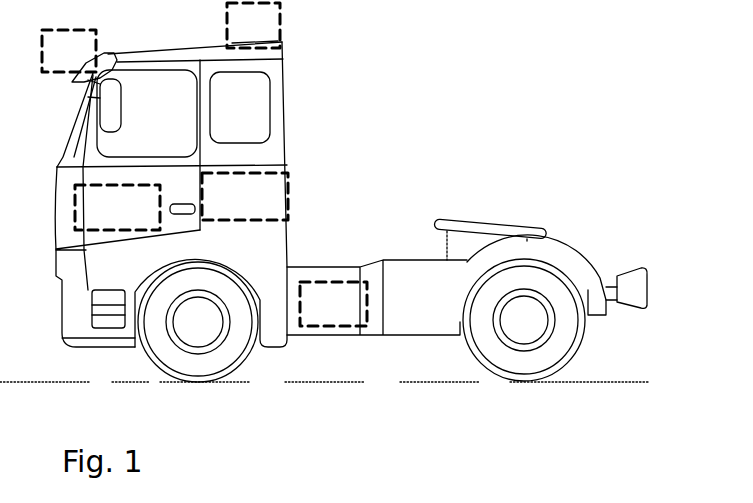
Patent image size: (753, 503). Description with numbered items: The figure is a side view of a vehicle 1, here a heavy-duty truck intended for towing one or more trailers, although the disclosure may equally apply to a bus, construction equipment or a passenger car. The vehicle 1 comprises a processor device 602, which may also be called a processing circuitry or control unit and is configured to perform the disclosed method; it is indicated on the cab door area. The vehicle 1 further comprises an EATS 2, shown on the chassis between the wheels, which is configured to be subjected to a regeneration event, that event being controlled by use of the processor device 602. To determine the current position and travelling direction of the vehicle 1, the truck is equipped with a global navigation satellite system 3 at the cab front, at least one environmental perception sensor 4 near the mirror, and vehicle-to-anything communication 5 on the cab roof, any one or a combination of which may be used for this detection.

The vehicle 1 is at (394, 151).
The EATS 2 is at (341, 316).
The global navigation satellite system 3 is at (123, 220).
The environmental perception sensor 4 is at (75, 64).
The vehicle-to-anything communication 5 is at (260, 36).
The processor device 602 is at (262, 205).